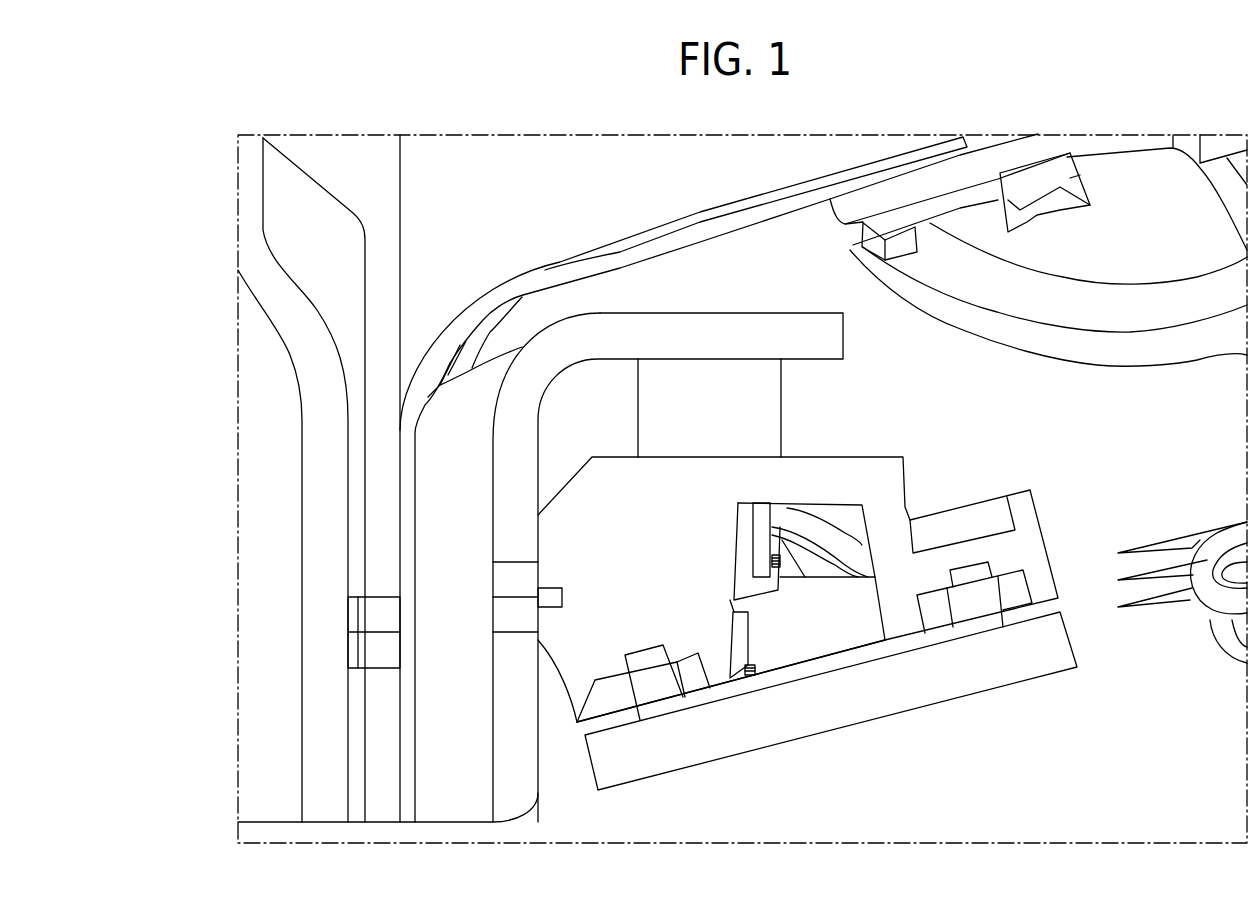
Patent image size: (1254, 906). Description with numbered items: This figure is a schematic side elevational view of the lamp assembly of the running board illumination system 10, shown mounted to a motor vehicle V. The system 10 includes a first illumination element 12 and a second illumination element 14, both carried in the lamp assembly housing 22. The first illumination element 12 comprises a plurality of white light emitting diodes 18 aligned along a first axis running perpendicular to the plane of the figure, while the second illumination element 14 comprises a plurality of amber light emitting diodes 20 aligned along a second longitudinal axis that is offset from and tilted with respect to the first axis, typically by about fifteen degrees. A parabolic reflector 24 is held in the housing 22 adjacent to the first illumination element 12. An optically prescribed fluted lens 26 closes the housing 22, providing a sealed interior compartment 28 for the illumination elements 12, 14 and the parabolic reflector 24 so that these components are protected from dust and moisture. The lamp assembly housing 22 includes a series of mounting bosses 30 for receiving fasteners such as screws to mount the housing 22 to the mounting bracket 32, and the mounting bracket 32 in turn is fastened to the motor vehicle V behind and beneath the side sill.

The motor vehicle V is at (365, 533).
The running board illumination system 10 is at (905, 432).
The first illumination element 12 is at (760, 555).
The second illumination element 14 is at (737, 650).
The white light emitting diodes 18 is at (777, 590).
The amber light emitting diodes 20 is at (788, 643).
The lamp assembly housing 22 is at (900, 472).
The parabolic reflector 24 is at (808, 563).
The fluted lens 26 is at (872, 703).
The sealed interior compartment 28 is at (765, 672).
The mounting bosses 30 is at (708, 395).
The mounting bracket 32 is at (575, 330).